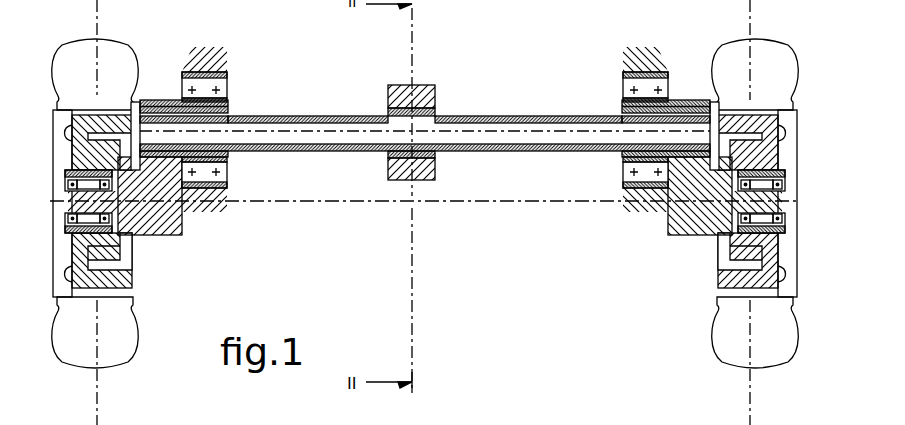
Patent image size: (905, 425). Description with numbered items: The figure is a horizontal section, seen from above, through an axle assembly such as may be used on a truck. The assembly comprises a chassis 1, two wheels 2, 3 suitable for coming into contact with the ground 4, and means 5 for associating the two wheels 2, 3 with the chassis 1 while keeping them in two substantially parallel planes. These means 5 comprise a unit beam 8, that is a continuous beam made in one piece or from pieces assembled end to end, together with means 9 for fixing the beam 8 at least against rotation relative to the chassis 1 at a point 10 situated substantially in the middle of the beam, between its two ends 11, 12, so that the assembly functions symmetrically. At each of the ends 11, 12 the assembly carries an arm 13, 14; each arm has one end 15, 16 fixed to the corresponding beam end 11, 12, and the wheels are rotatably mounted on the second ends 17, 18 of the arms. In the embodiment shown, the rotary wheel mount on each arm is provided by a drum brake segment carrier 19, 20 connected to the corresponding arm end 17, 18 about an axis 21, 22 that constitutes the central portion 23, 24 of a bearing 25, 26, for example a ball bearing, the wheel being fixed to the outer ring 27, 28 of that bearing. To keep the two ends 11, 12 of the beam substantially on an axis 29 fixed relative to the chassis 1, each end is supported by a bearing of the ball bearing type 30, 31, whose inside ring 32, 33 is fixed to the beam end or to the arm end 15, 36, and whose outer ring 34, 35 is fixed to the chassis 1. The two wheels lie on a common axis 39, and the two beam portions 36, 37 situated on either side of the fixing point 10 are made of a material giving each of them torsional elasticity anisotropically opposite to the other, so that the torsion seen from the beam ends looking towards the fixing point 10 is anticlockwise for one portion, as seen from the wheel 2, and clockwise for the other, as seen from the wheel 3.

The chassis 1 is at (211, 55).
The wheel 2 is at (133, 360).
The wheel 3 is at (718, 361).
The ground 4 is at (545, 304).
The means for associating the two wheels with the chassis 5 is at (307, 157).
The unit beam 8 is at (505, 117).
The means for fixing the beam 9 is at (434, 160).
The fixing point 10 is at (427, 115).
The beam end 11 is at (141, 101).
The beam end 12 is at (673, 103).
The arm 13 is at (153, 215).
The arm 14 is at (703, 210).
The arm end 15 is at (163, 100).
The arm end 16 is at (673, 100).
The second arm end 17 is at (170, 222).
The second arm end 18 is at (677, 198).
The drum brake segment carrier 19 is at (128, 252).
The drum brake segment carrier 20 is at (718, 265).
The axis 21 is at (75, 228).
The axis 22 is at (780, 225).
The central portion of bearing 23 is at (132, 238).
The central portion of bearing 24 is at (733, 240).
The bearing 25 is at (120, 248).
The bearing 26 is at (778, 172).
The outer ring 27 is at (72, 172).
The outer ring 28 is at (723, 258).
The axis 29 is at (358, 132).
The ball bearing 30 is at (229, 88).
The ball bearing 31 is at (623, 88).
The inside ring 32 is at (230, 101).
The inside ring 33 is at (622, 108).
The outer ring 34 is at (229, 183).
The outer ring 35 is at (622, 180).
The beam portion 36 is at (322, 115).
The beam portion 37 is at (467, 117).
The common axis 39 is at (542, 202).